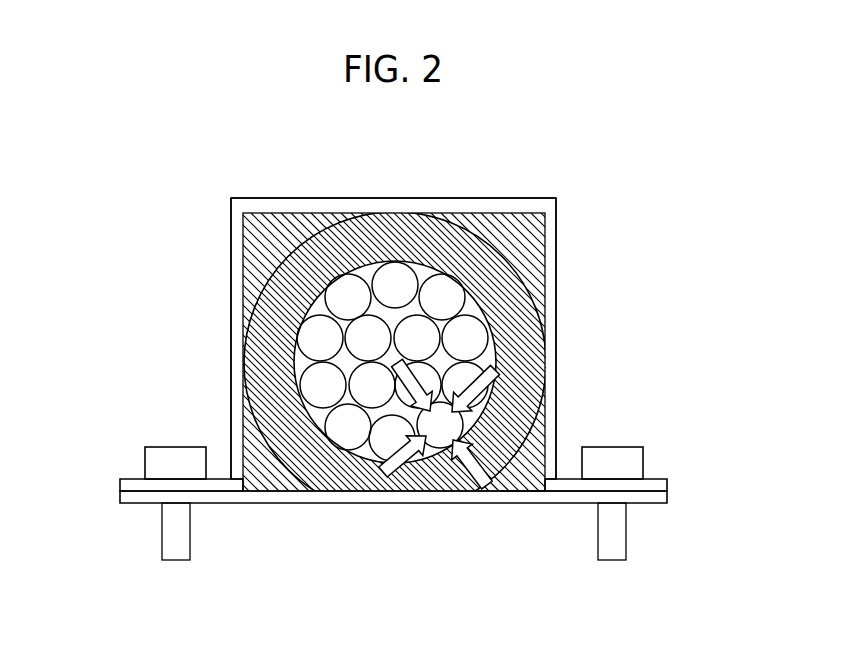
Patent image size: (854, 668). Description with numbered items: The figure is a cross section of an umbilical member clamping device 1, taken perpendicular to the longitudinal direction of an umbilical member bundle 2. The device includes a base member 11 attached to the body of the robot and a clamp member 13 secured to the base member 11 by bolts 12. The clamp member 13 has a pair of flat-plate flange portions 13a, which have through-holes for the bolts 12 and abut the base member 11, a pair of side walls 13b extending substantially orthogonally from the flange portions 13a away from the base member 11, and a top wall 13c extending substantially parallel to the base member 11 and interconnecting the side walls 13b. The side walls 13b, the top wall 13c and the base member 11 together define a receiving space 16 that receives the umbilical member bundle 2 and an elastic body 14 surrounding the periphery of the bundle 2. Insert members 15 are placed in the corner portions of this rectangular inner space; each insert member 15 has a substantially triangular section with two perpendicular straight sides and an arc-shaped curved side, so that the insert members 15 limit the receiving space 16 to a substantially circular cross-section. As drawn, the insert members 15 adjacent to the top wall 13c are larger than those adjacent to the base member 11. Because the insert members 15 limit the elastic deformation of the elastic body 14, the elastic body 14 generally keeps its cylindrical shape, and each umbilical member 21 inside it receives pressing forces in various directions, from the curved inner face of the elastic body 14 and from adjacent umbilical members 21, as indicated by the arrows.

The umbilical member clamping device 1 is at (81, 137).
The umbilical member bundle 2 is at (397, 250).
The umbilical member 21 is at (310, 387).
The base member 11 is at (653, 503).
The bolts 12 is at (177, 447).
The clamp member 13 is at (327, 181).
The flange portions 13a is at (124, 478).
The side walls 13b is at (230, 260).
The top wall 13c is at (468, 198).
The elastic body 14 is at (533, 353).
The insert members 15 is at (276, 220).
The receiving space 16 is at (529, 500).